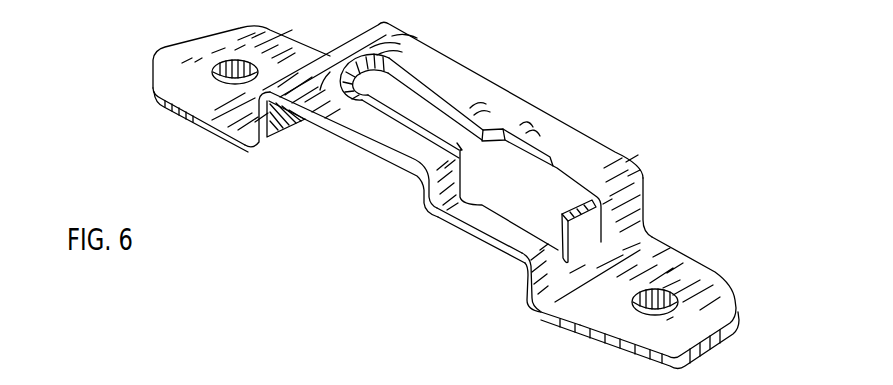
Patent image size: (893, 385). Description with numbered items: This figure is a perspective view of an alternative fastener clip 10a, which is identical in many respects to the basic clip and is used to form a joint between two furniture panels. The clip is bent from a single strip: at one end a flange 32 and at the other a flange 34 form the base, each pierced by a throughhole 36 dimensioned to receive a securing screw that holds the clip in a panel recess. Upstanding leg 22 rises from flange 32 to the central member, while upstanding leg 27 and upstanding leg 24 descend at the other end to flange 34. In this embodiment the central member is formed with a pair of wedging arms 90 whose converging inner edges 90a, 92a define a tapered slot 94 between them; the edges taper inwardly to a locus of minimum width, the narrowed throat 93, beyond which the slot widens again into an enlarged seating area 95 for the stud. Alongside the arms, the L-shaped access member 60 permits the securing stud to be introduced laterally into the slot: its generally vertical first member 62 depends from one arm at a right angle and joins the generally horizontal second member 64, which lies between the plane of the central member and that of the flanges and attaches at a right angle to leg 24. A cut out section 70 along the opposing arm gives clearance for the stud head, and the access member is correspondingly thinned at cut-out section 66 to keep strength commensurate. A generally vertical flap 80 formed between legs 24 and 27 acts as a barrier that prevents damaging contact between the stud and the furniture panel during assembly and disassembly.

The fastener clip 10a is at (124, 40).
The upstanding leg 22 is at (250, 134).
The upstanding leg 24 is at (540, 299).
The upstanding leg 27 is at (642, 200).
The flange 32 is at (173, 74).
The flange 34 is at (722, 307).
The throughhole 36 is at (231, 63).
The access member 60 is at (470, 225).
The first member 62 is at (423, 193).
The second member 64 is at (490, 250).
The cut-out section 66 is at (468, 201).
The cut out section 70 is at (558, 160).
The flap 80 is at (592, 235).
The wedging arm 90 is at (343, 118).
The inner edge 90a is at (396, 103).
The inner edge 92a is at (522, 118).
The throat 93 is at (383, 74).
The tapered slot 94 is at (405, 114).
The seating area 95 is at (366, 62).